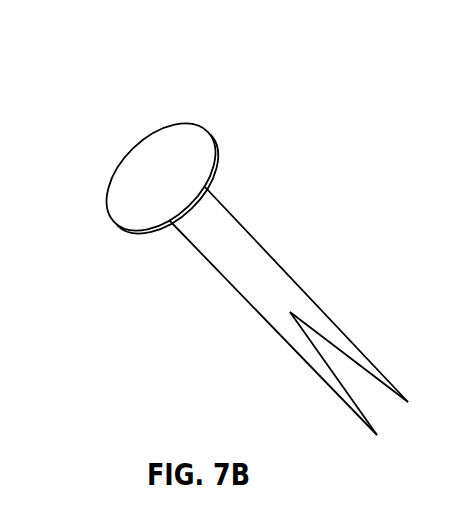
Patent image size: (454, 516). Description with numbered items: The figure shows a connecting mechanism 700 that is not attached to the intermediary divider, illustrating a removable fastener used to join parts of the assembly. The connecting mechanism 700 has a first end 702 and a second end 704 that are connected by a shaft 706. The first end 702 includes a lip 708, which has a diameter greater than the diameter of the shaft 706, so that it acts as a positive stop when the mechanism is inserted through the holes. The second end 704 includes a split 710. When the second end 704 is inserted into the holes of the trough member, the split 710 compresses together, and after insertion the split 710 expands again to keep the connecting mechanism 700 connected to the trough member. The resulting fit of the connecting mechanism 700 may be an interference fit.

The connecting mechanism 700 is at (115, 58).
The first end 702 is at (140, 153).
The second end 704 is at (333, 388).
The shaft 706 is at (253, 285).
The lip 708 is at (185, 237).
The split 710 is at (370, 360).